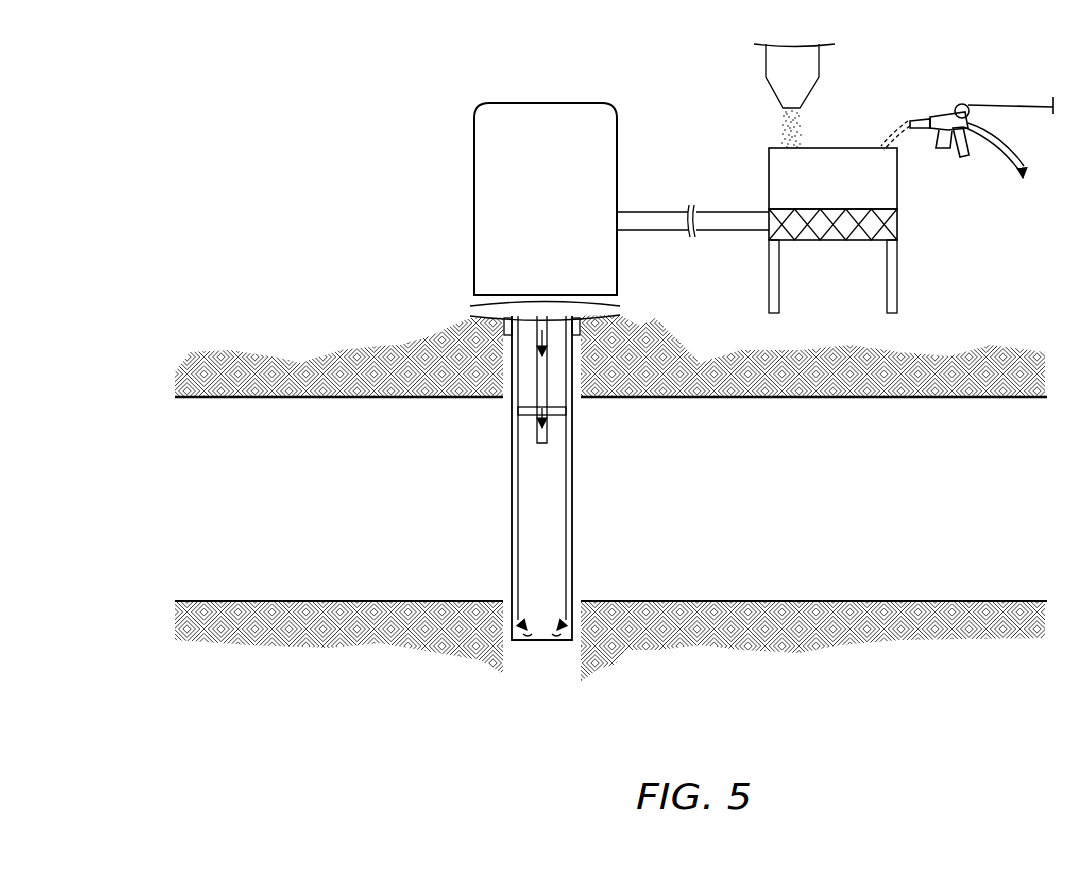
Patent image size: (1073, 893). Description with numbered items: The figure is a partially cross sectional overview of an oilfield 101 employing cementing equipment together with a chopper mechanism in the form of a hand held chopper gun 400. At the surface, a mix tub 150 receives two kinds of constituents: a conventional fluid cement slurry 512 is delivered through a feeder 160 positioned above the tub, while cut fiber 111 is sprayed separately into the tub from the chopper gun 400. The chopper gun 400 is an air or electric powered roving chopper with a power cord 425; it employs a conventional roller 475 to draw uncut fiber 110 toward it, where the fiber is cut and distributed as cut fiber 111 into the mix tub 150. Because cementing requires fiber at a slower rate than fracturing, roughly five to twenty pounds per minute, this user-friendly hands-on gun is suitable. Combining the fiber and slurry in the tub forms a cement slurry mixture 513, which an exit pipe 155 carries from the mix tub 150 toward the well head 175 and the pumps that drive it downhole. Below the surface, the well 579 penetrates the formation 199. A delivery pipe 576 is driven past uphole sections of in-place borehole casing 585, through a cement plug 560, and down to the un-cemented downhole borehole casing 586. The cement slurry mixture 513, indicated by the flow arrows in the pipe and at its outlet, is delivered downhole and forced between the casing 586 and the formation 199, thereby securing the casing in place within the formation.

The oilfield 101 is at (240, 116).
The formation 199 is at (248, 326).
The well head 175 is at (551, 122).
The exit pipe 155 is at (722, 220).
The mix tub 150 is at (846, 127).
The feeder 160 is at (769, 69).
The cement slurry 512 is at (788, 125).
The cut fiber 111 is at (893, 126).
The chopper gun 400 is at (940, 107).
The roller 475 is at (970, 111).
The uncut fiber 110 is at (1007, 105).
The power cord 425 is at (1004, 158).
The downhole borehole casing 586 is at (565, 527).
The well 579 is at (538, 527).
The uphole borehole casing 585 is at (576, 336).
The cement plug 560 is at (560, 412).
The delivery pipe 576 is at (537, 392).
The cement slurry mixture 513 is at (537, 422).